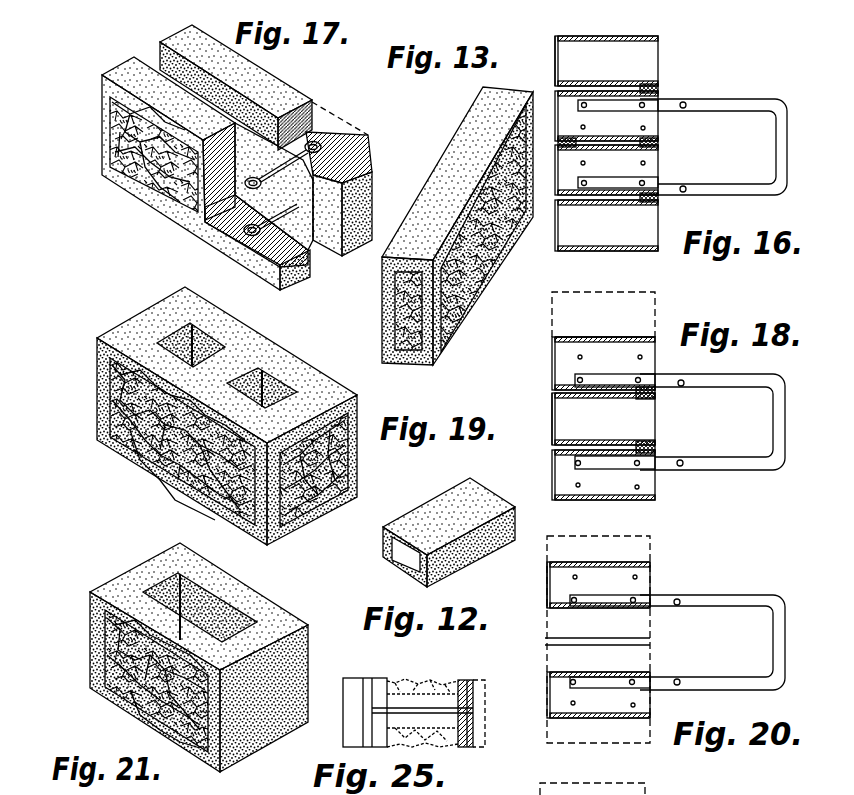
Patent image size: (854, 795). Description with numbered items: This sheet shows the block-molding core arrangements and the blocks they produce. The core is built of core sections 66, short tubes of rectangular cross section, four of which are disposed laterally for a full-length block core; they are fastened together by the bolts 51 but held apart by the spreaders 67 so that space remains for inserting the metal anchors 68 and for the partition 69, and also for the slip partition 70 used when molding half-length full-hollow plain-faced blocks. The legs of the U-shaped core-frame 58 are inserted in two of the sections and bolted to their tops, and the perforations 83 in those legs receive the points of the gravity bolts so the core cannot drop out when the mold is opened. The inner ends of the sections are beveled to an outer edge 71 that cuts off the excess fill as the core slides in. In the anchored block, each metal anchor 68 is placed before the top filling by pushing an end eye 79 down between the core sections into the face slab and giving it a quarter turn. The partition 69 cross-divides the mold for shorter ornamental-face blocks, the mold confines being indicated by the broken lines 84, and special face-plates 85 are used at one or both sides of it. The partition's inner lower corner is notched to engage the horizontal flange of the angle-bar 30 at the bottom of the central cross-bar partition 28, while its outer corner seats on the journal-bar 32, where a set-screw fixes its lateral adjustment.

In FIG. 17, the end eye 79 is at (346, 132).
In FIG. 17, the metal anchor 68 is at (283, 192).
In FIG. 16, the outer edge 71 is at (557, 40).
In FIG. 18, the outer edge 71 is at (551, 399).
In FIG. 20, the outer edge 71 is at (546, 594).
In FIG. 16, the core section 66 is at (606, 143).
In FIG. 18, the core section 66 is at (603, 418).
In FIG. 20, the core section 66 is at (598, 640).
In FIG. 16, the bolt 51 is at (660, 78).
In FIG. 18, the bolt 51 is at (652, 436).
In FIG. 16, the spreader 67 is at (660, 92).
In FIG. 18, the spreader 67 is at (656, 449).
In FIG. 16, the slip partition 70 is at (563, 147).
In FIG. 16, the perforation 83 is at (686, 186).
In FIG. 18, the perforation 83 is at (683, 460).
In FIG. 20, the perforation 83 is at (680, 679).
In FIG. 16, the U-shaped core-frame 58 is at (787, 148).
In FIG. 18, the U-shaped core-frame 58 is at (786, 427).
In FIG. 20, the U-shaped core-frame 58 is at (785, 645).
In FIG. 18, the broken lines 84 is at (603, 314).
In FIG. 20, the broken lines 84 is at (650, 550).
In FIG. 18, the partition 69 is at (583, 340).
In FIG. 20, the partition 69 is at (650, 641).
In FIG. 25, the partition 69 is at (475, 711).
In FIG. 25, the cross-bar partition 28 is at (366, 678).
In FIG. 25, the angle-bar 30 is at (343, 712).
In FIG. 25, the face-plate 85 is at (443, 737).
In FIG. 25, the journal-bar 32 is at (473, 738).